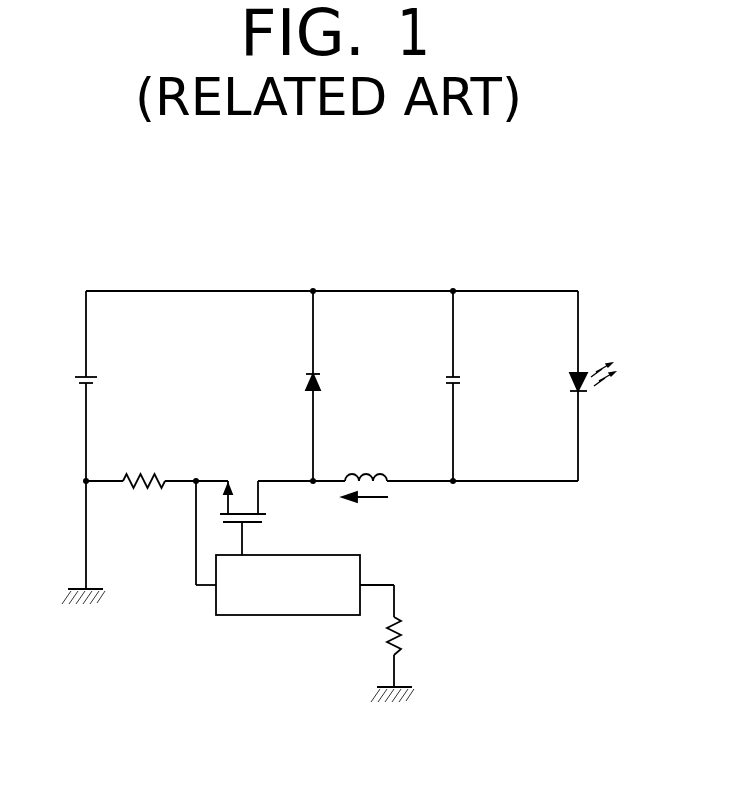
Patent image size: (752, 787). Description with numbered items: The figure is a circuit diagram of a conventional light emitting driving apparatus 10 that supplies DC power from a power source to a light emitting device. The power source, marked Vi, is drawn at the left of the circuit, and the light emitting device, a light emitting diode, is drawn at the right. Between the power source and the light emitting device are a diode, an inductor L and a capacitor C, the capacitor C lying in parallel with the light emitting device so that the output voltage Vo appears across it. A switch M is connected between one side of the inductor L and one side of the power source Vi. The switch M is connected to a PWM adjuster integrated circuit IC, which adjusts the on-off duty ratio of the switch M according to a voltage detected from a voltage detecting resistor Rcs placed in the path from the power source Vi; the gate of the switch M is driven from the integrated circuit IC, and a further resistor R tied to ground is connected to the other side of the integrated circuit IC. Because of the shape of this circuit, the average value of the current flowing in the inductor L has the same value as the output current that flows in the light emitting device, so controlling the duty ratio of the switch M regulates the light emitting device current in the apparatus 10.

The light emitting driving apparatus 10 is at (337, 201).
The input voltage source Vi is at (69, 378).
The voltage detecting resistor Rcs is at (144, 466).
The switch M is at (243, 502).
The PWM adjuster integrated circuit IC is at (288, 585).
The inductor L is at (365, 490).
The output capacitor C is at (440, 386).
The output voltage Vo is at (500, 379).
The resistor R is at (406, 636).